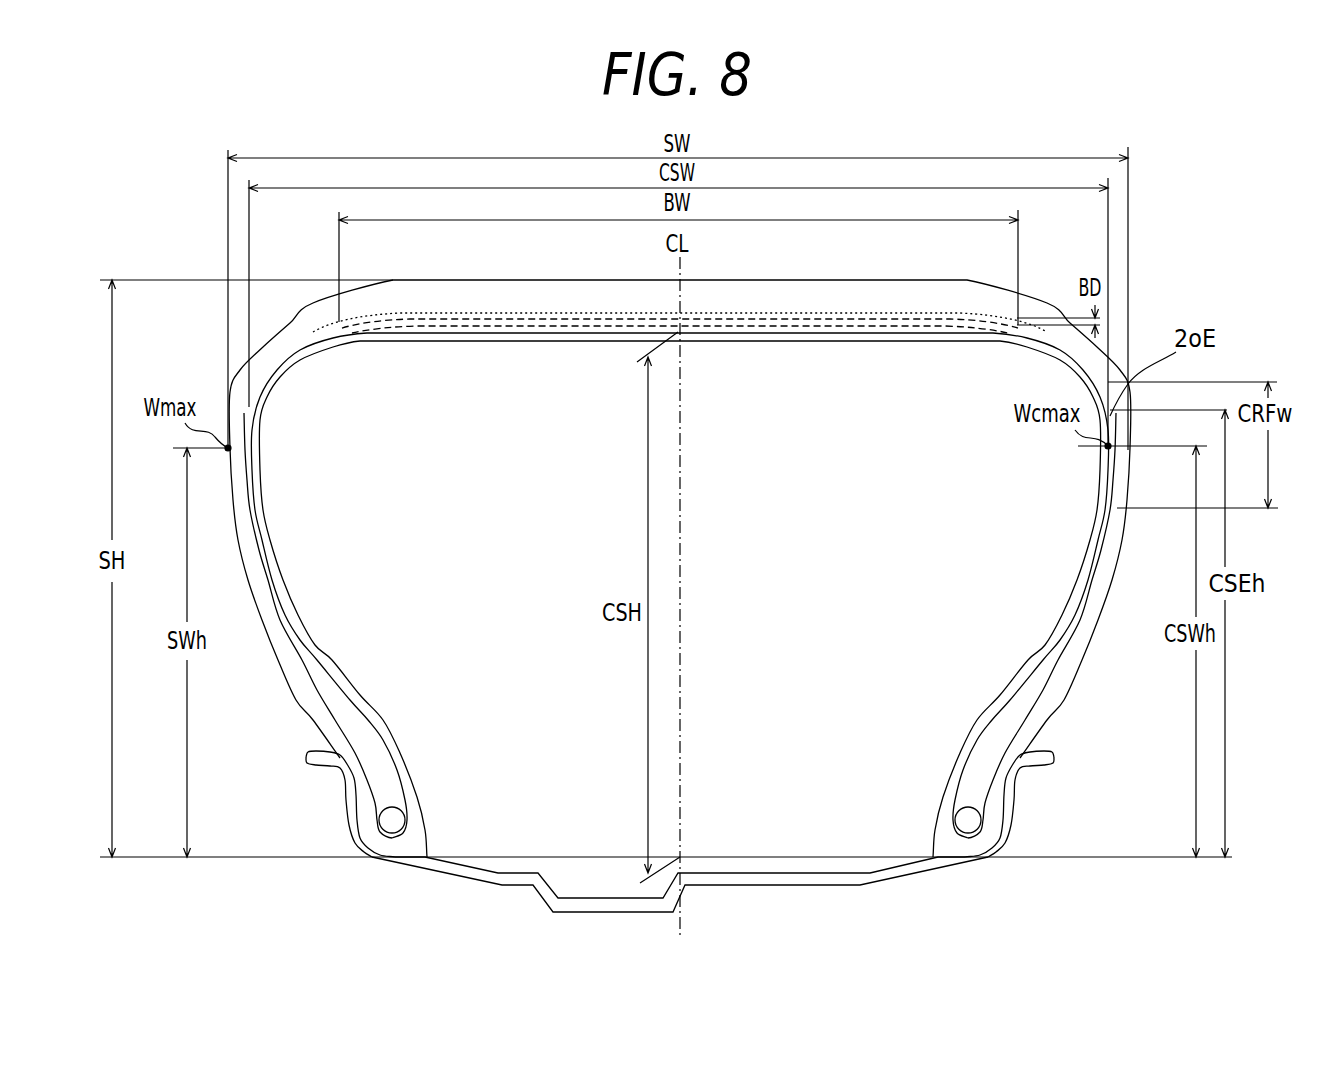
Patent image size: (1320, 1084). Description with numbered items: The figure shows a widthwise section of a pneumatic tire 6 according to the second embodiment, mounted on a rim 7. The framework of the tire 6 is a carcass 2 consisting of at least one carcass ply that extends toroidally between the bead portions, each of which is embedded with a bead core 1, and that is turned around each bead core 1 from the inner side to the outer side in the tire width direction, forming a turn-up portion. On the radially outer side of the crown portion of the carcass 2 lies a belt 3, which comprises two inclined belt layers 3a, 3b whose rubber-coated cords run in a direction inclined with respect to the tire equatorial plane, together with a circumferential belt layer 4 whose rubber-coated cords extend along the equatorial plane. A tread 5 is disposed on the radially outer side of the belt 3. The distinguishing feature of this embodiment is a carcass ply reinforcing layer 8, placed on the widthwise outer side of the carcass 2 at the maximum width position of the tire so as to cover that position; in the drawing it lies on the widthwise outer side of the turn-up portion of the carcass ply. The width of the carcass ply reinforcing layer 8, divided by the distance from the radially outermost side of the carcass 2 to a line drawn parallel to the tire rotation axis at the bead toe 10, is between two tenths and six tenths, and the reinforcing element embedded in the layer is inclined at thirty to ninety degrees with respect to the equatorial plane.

The bead core 1 is at (393, 818).
The carcass 2 is at (1093, 548).
The belt 3 is at (913, 410).
The inclined belt layer 3a is at (968, 328).
The inclined belt layer (outermost layer) 3b is at (1003, 326).
The circumferential belt layer 4 is at (876, 313).
The tread 5 is at (520, 279).
The tire 6 is at (211, 336).
The rim 7 is at (1023, 782).
The carcass ply reinforcing layer 8 is at (243, 470).
The bead toe 10 is at (425, 857).